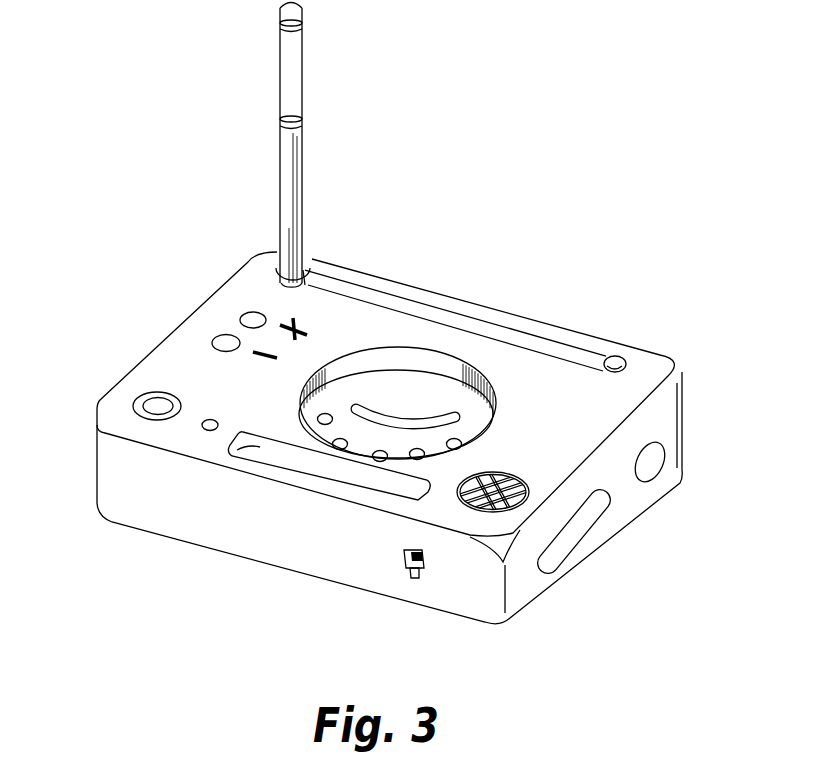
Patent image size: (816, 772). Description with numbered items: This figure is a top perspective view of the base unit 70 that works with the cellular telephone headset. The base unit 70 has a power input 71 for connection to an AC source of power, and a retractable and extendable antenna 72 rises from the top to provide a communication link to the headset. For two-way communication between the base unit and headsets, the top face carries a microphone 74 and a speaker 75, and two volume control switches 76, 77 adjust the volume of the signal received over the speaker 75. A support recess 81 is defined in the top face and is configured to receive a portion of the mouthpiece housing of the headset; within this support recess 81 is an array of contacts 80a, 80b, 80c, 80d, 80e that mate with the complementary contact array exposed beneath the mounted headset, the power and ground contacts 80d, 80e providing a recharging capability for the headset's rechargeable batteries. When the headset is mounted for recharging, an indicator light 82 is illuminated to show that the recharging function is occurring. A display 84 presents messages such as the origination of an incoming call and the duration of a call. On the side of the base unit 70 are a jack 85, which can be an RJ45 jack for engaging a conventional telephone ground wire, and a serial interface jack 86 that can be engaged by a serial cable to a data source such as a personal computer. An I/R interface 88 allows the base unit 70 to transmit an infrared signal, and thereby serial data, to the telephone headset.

The base unit 70 is at (411, 275).
The power input 71 is at (647, 468).
The antenna 72 is at (302, 67).
The microphone 74 is at (142, 396).
The speaker 75 is at (512, 475).
The volume control switch 76 is at (252, 312).
The volume control switch 77 is at (222, 337).
The contact 80a is at (320, 427).
The contact 80b is at (336, 446).
The contact 80c is at (375, 457).
The power contact 80d is at (413, 456).
The ground contact 80e is at (459, 440).
The support recess 81 is at (383, 359).
The indicator light 82 is at (208, 419).
The display 84 is at (232, 445).
The jack 85 is at (416, 580).
The serial interface jack 86 is at (569, 555).
The I/R interface 88 is at (395, 374).